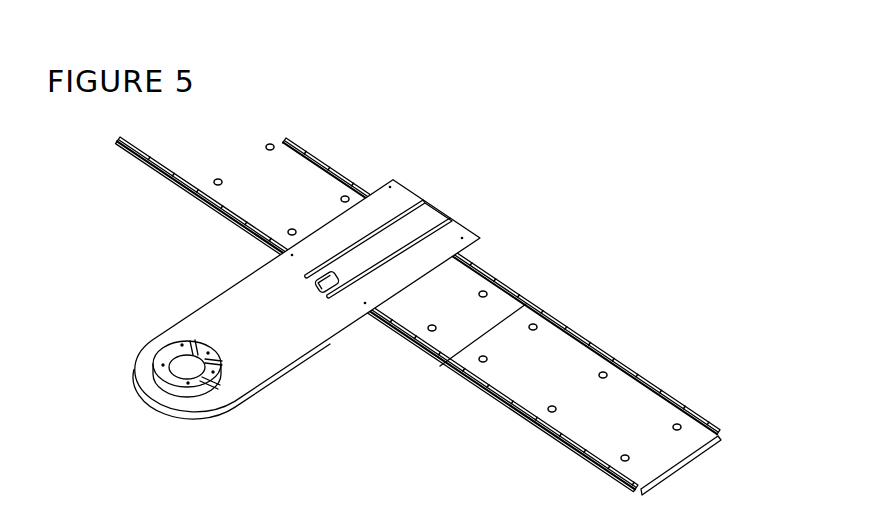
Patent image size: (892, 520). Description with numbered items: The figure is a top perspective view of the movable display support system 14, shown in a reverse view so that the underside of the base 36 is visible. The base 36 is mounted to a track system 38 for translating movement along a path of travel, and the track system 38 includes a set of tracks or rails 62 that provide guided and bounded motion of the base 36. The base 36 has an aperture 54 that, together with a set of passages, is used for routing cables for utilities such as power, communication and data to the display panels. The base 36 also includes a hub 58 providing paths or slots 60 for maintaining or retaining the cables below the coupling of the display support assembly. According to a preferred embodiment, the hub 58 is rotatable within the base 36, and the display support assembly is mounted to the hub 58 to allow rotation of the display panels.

The movable display support system 14 is at (361, 93).
The base 36 is at (423, 215).
The track system 38 is at (537, 367).
The aperture 54 is at (317, 287).
The hub 58 is at (160, 373).
The slots 60 is at (167, 355).
The rails 62 is at (510, 289).